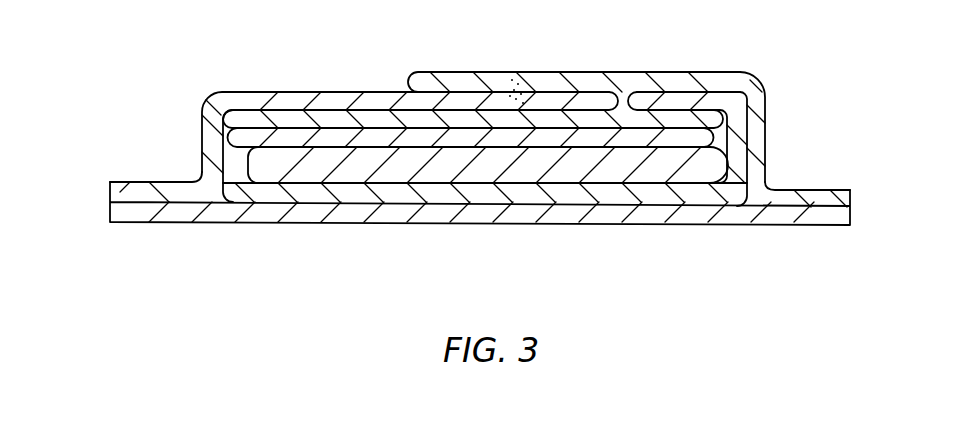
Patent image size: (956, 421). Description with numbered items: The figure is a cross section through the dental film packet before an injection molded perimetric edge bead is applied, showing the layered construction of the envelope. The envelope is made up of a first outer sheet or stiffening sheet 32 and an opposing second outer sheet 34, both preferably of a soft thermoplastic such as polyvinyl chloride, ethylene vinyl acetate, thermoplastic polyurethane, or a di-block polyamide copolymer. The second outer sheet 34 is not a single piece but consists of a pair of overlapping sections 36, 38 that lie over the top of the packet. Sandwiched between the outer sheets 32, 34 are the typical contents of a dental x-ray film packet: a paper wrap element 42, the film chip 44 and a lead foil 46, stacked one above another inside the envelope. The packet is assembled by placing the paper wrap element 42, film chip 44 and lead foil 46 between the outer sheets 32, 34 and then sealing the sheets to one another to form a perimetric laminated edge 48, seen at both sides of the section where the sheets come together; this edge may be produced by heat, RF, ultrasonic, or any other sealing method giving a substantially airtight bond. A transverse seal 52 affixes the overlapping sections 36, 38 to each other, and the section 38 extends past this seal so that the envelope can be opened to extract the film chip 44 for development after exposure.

The first outer sheet 32 is at (655, 212).
The second outer sheet 34 is at (445, 72).
The overlapping section 36 is at (295, 92).
The overlapping section 38 is at (685, 80).
The paper wrap element 42 is at (585, 190).
The film chip 44 is at (483, 170).
The lead foil 46 is at (563, 100).
The perimetric laminated edge 48 is at (152, 182).
The transverse seal 52 is at (515, 73).